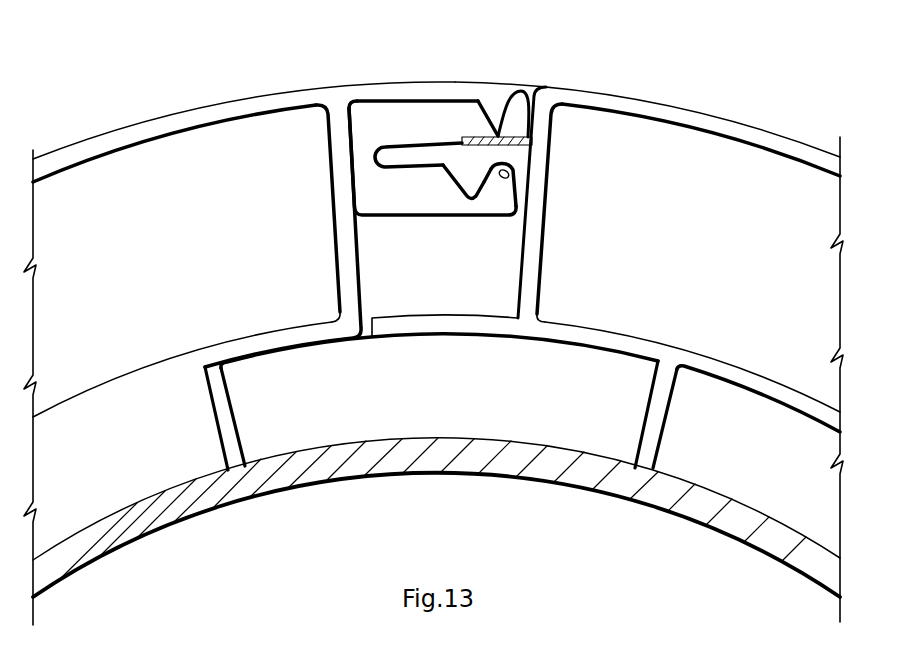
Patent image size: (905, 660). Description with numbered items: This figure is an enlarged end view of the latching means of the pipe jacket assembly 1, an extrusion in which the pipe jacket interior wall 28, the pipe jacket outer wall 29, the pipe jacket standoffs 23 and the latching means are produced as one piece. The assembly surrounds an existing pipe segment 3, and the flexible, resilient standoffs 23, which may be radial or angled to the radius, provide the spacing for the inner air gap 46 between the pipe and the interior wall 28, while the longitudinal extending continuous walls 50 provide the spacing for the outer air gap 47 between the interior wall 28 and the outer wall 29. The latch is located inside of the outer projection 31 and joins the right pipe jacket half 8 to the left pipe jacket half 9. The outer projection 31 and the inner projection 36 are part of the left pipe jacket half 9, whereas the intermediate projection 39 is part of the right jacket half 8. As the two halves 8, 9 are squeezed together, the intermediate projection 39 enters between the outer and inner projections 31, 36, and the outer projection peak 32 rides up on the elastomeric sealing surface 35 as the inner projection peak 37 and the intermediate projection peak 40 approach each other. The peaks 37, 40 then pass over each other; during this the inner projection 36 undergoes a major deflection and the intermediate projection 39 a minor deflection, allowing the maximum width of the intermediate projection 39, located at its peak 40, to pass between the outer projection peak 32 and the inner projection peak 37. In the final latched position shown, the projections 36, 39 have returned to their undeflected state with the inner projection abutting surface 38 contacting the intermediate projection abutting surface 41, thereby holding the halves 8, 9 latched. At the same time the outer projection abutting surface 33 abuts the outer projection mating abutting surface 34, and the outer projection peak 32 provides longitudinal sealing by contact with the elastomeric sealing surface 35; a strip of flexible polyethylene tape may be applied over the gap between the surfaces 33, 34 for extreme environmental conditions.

The pipe jacket assembly 1 is at (742, 90).
The pipe segment 3 is at (456, 472).
The right pipe jacket half 8 is at (779, 134).
The left pipe jacket half 9 is at (136, 124).
The pipe jacket standoffs 23 is at (236, 410).
The pipe jacket interior wall 28 is at (132, 374).
The pipe jacket outer wall 29 is at (110, 148).
The outer projection 31 is at (412, 84).
The outer projection peak 32 is at (502, 132).
The outer projection abutting surface 33 is at (519, 100).
The outer projection mating abutting surface 34 is at (537, 101).
The elastomeric sealing surface 35 is at (478, 137).
The inner projection 36 is at (430, 216).
The inner projection peak 37 is at (510, 176).
The inner projection abutting surface 38 is at (484, 189).
The intermediate projection 39 is at (395, 146).
The intermediate projection peak 40 is at (468, 194).
The intermediate projection abutting surface 41 is at (491, 177).
The inner air gap 46 is at (131, 472).
The outer air gap 47 is at (196, 239).
The longitudinal extending continuous walls 50 is at (338, 293).